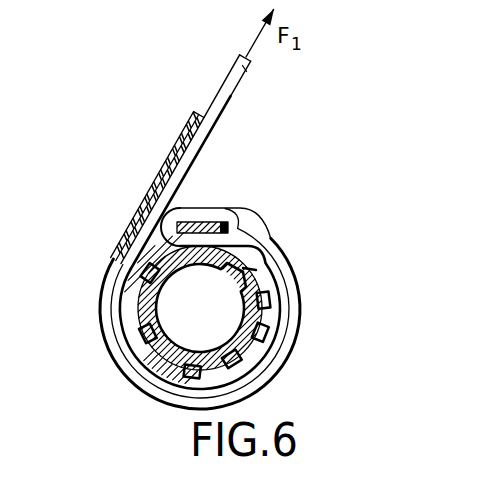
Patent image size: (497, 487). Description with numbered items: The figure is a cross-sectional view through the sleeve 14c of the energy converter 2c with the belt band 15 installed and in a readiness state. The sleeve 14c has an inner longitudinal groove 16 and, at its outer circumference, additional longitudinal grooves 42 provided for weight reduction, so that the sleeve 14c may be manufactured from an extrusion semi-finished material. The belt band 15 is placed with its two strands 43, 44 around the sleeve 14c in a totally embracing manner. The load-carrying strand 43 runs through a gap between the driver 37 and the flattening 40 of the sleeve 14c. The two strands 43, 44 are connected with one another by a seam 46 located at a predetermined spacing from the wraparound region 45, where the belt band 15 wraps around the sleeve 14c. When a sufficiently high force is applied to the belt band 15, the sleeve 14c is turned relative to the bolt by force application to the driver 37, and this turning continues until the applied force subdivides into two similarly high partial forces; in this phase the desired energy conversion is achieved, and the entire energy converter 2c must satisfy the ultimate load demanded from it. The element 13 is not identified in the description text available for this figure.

The energy converter 2c is at (291, 228).
The pipe 13 is at (188, 338).
The sleeve 14c is at (275, 284).
The belt band 15 is at (237, 94).
The inner longitudinal groove 16 is at (258, 265).
The driver 37 is at (206, 222).
The flattening 40 is at (160, 246).
The additional longitudinal grooves 42 is at (125, 302).
The load-carrying strand 43 is at (227, 78).
The strand 44 is at (190, 118).
The wraparound region 45 is at (143, 214).
The seam 46 is at (160, 180).